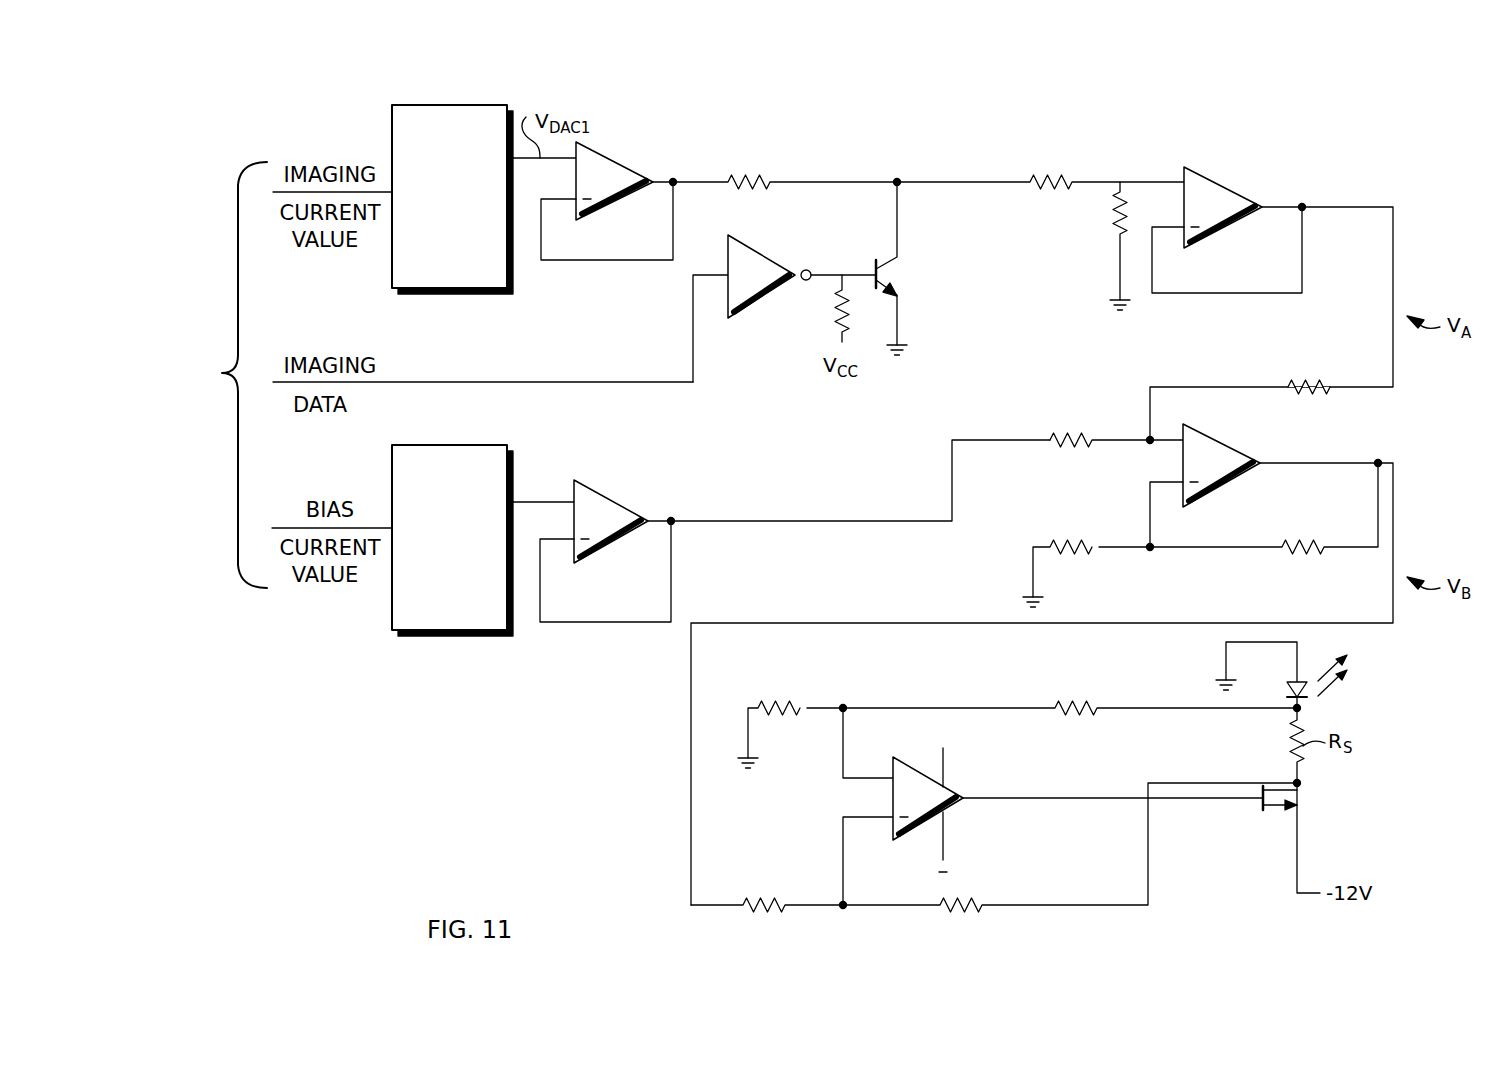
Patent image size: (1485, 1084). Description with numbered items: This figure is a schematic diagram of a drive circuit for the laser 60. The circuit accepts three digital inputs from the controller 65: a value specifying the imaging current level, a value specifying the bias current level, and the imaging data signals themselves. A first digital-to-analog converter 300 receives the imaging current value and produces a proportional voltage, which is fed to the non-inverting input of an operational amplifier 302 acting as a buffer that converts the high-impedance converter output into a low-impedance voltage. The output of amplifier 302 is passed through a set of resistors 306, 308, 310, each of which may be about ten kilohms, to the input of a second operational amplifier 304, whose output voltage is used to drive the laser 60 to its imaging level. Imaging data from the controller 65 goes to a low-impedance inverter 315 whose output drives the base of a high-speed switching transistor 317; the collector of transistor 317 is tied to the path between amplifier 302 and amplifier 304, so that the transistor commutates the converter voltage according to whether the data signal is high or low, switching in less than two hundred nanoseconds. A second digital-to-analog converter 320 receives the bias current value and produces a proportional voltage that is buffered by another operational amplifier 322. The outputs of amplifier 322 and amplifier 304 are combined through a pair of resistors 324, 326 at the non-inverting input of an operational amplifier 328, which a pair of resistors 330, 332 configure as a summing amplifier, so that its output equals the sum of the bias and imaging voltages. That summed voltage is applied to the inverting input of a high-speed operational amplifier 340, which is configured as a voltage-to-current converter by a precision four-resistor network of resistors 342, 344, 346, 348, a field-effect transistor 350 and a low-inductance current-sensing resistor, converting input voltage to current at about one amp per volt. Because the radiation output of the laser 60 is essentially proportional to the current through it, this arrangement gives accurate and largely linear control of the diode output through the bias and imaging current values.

The controller 65 is at (131, 388).
The first digital-to-analog converter 300 is at (430, 267).
The second digital-to-analog converter 320 is at (430, 607).
The operational amplifier 302 is at (606, 156).
The second operational amplifier 304 is at (1213, 180).
The resistor 306 is at (744, 178).
The resistor 308 is at (1035, 182).
The resistor 310 is at (1116, 234).
The inverter 315 is at (745, 239).
The high-speed switching transistor 317 is at (886, 269).
The operational amplifier 322 is at (596, 493).
The resistor 324 is at (1055, 432).
The resistor 326 is at (1290, 382).
The operational amplifier 328 is at (1213, 440).
The resistor 330 is at (1068, 542).
The resistor 332 is at (1298, 542).
The high-speed operational amplifier 340 is at (906, 728).
The resistor 342 is at (777, 708).
The resistor 344 is at (1072, 708).
The resistor 346 is at (980, 907).
The resistor 348 is at (750, 906).
The field-effect transistor 350 is at (1283, 811).
The laser 60 is at (1296, 683).